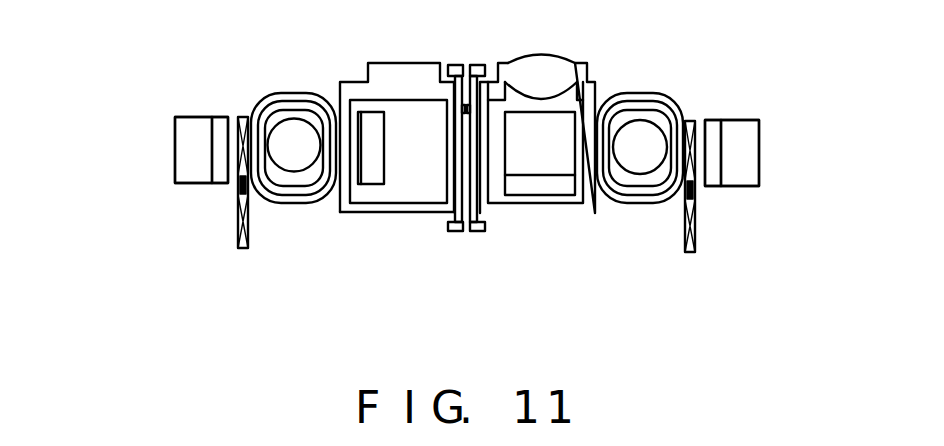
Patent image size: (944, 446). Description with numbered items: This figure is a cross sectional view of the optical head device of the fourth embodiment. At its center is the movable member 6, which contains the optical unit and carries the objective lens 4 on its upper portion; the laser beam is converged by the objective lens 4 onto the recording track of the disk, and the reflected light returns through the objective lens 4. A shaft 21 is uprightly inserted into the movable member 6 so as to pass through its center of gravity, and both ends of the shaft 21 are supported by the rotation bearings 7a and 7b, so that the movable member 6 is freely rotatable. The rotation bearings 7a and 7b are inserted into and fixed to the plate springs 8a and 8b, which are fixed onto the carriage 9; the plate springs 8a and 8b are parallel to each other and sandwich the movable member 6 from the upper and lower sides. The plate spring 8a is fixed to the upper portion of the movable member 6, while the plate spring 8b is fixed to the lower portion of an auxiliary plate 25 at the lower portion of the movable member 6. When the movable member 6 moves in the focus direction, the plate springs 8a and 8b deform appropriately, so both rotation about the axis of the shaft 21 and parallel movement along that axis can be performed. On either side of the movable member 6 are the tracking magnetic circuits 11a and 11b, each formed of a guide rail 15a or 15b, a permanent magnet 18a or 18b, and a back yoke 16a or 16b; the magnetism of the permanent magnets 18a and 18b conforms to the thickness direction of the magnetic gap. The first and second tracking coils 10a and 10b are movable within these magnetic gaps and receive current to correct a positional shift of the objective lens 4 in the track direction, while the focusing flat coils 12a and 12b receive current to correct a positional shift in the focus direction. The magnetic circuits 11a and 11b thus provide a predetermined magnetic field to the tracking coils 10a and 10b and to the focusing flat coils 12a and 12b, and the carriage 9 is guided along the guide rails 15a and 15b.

The objective lens 4 is at (545, 66).
The movable member 6 is at (387, 77).
The rotation bearing 7a is at (472, 65).
The rotation bearing 7b is at (463, 233).
The plate spring 8a is at (449, 65).
The plate spring 8b is at (480, 231).
The carriage 9 is at (373, 175).
The first tracking coil 10a is at (668, 95).
The second tracking coil 10b is at (287, 93).
The tracking magnetic circuit 11a is at (767, 195).
The tracking magnetic circuit 11b is at (160, 124).
The focusing flat coil 12a is at (697, 240).
The focusing flat coil 12b is at (239, 230).
The guide rail 15a is at (640, 132).
The guide rail 15b is at (293, 128).
The back yoke 16a is at (753, 137).
The back yoke 16b is at (193, 177).
The permanent magnet 18a is at (712, 120).
The permanent magnet 18b is at (224, 117).
The shaft 21 is at (462, 205).
The auxiliary plate 25 is at (352, 213).